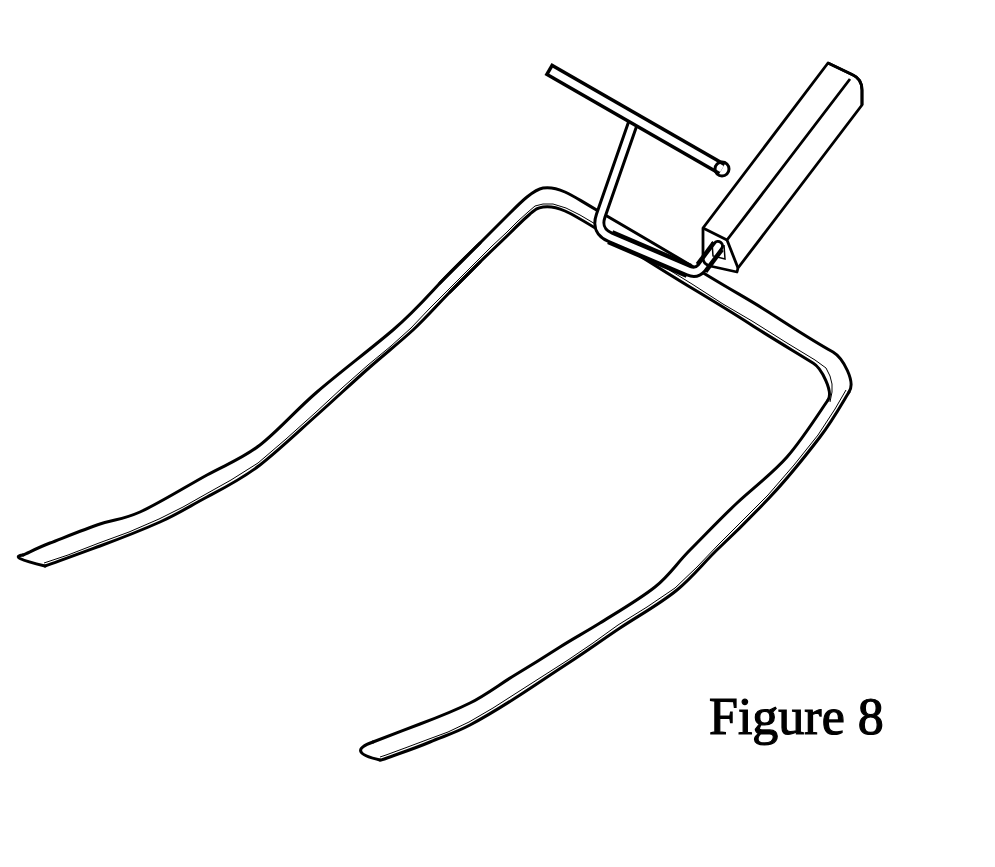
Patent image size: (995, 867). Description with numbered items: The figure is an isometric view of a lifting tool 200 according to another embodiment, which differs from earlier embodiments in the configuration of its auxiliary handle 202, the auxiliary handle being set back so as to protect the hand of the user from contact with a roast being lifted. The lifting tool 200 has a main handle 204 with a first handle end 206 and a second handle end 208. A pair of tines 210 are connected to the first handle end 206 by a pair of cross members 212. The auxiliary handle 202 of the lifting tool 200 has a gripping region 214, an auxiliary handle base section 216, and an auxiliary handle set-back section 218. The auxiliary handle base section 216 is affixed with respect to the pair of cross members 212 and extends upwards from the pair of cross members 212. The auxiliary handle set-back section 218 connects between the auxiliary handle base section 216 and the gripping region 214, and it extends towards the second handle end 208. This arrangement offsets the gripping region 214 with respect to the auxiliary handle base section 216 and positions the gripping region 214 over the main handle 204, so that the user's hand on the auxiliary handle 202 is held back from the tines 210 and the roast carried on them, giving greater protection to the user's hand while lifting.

The lifting tool 200 is at (392, 190).
The auxiliary handle 202 is at (645, 86).
The main handle 204 is at (796, 214).
The first handle end 206 is at (708, 262).
The second handle end 208 is at (848, 97).
The pair of tines 210 is at (433, 501).
The pair of cross members 212 is at (645, 306).
The gripping region 214 is at (673, 130).
The auxiliary handle base section 216 is at (633, 247).
The auxiliary handle set-back section 218 is at (617, 168).